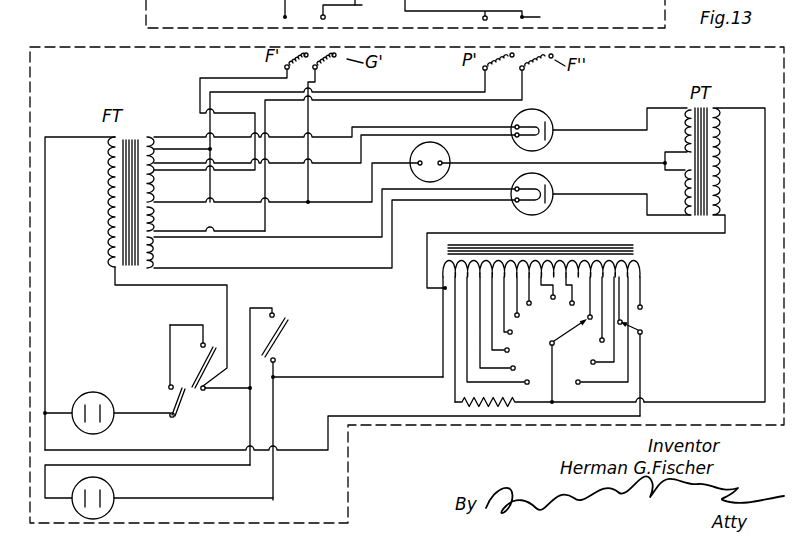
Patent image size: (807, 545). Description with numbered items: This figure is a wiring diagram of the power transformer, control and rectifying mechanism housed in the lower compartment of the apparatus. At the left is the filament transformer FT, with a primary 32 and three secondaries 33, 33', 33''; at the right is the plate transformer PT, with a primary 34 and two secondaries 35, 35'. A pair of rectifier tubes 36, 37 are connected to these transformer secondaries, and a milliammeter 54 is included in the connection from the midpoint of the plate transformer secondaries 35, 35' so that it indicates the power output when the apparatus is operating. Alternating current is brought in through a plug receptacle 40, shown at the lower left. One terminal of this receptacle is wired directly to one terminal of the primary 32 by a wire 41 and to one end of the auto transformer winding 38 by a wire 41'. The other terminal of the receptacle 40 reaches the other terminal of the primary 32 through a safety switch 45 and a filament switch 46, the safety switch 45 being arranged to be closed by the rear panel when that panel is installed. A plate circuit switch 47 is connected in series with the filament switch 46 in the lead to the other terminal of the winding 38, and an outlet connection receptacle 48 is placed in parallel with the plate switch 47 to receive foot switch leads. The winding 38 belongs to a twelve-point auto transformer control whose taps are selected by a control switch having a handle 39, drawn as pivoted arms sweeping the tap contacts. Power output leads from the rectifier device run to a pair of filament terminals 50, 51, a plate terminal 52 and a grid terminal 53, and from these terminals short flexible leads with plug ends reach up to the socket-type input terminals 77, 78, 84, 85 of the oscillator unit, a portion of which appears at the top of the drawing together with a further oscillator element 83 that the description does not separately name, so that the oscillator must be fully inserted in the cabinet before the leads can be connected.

The primary 32 is at (103, 212).
The secondary 33 is at (160, 154).
The secondary 33' is at (169, 202).
The secondary 33'' is at (174, 252).
The primary 34 is at (722, 158).
The secondary 35 is at (666, 140).
The secondary 35' is at (664, 192).
The rectifier tube 36 is at (548, 115).
The rectifier tube 37 is at (550, 179).
The winding 38 is at (632, 266).
The handle 39 is at (568, 336).
The plug receptacle 40 is at (99, 392).
The wire 41 is at (80, 293).
The wire 41' is at (342, 433).
The safety switch 45 is at (171, 400).
The filament switch 46 is at (211, 342).
The plate circuit switch 47 is at (280, 314).
The outlet connection receptacle 48 is at (114, 491).
The filament terminal 50 is at (328, 71).
The filament terminal 51 is at (480, 71).
The plate terminal 52 is at (284, 70).
The grid terminal 53 is at (539, 70).
The milliammeter 54 is at (446, 148).
The input terminal 77 is at (270, 13).
The input terminal 78 is at (544, 12).
The contact 83 is at (370, 8).
The input terminal 84 is at (338, 14).
The input terminal 85 is at (482, 18).